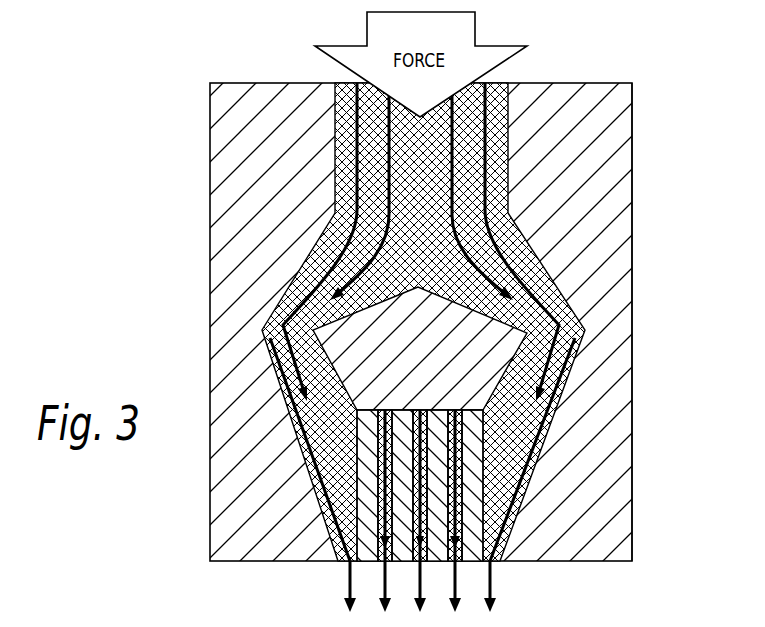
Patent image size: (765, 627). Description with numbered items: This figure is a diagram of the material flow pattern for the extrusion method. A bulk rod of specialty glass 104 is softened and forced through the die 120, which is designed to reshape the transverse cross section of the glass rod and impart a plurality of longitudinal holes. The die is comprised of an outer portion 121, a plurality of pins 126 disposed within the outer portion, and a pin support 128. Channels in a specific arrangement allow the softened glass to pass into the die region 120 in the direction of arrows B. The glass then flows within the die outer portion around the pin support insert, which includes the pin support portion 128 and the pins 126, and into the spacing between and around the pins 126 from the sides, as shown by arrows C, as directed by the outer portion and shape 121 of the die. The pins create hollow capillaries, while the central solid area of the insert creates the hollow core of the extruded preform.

The bulk rod of specialty glass 104 is at (335, 130).
The die 120 is at (194, 213).
The outer portion 121 is at (633, 183).
The pins 126 is at (400, 450).
The pin support 128 is at (437, 350).
The arrows B is at (508, 162).
The arrows C is at (420, 588).